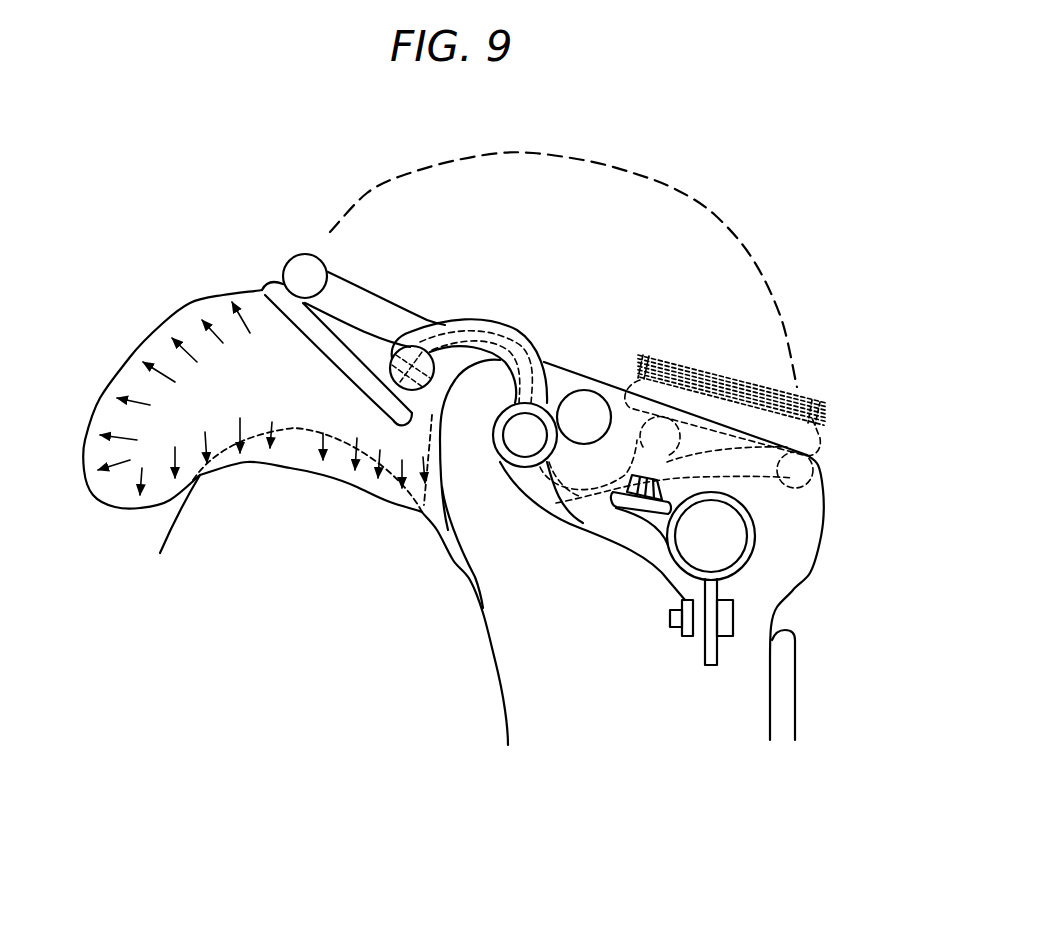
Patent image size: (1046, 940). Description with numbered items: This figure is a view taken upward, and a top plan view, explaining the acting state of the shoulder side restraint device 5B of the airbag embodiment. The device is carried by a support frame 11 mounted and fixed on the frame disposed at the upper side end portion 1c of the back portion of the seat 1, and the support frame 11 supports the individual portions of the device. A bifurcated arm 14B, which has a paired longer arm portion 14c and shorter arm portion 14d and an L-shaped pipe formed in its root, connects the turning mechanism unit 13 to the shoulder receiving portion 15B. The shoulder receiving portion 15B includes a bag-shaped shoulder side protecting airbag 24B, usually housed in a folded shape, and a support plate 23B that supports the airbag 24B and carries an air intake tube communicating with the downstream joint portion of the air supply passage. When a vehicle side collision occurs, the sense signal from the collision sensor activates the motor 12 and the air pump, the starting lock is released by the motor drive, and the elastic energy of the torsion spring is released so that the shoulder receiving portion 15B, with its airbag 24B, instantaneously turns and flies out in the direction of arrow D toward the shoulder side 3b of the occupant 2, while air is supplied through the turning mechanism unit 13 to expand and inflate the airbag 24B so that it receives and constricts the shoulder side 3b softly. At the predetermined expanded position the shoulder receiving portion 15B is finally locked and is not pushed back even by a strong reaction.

The seat 1 is at (632, 712).
The upper side end portion 1c is at (473, 415).
The occupant 2 is at (286, 712).
The shoulder side 3b is at (293, 430).
The shoulder side restraint device 5B is at (267, 235).
The support frame 11 is at (650, 538).
The motor 12 is at (590, 390).
The mounting ring 13 is at (551, 386).
The bifurcated arm 14B is at (513, 323).
The longer arm portion 14c is at (370, 313).
The shorter arm portion 14d is at (353, 420).
The shoulder receiving portion 15B is at (128, 353).
The support plate 23B is at (260, 288).
The shoulder side protecting airbag 24B is at (123, 480).
The direction of arrow D is at (330, 232).